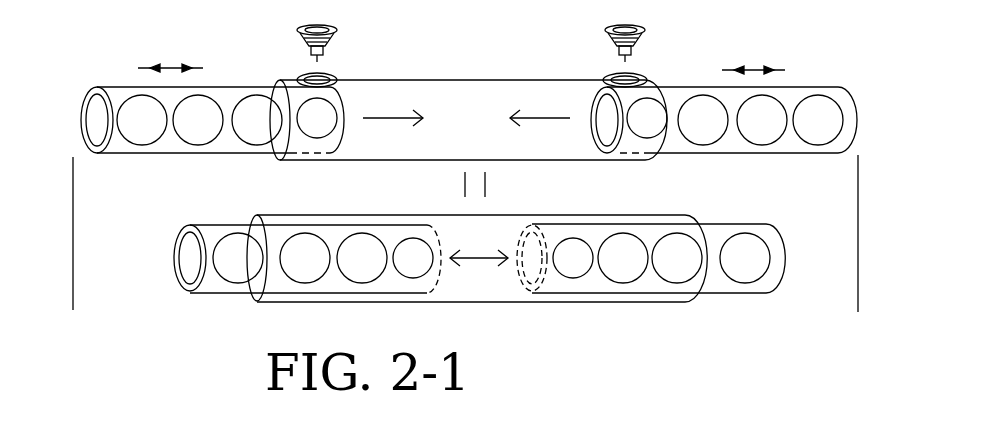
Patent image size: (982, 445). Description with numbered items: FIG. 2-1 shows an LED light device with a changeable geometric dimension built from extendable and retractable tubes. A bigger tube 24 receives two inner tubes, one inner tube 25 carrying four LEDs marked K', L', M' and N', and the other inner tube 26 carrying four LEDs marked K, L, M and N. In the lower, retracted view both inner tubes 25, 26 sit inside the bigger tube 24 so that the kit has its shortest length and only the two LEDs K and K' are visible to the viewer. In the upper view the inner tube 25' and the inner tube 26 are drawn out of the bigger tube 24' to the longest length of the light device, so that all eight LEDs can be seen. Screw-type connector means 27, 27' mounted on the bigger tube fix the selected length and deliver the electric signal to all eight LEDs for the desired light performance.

The bigger tube 24 is at (477, 288).
The bigger tube 24' is at (468, 97).
The inner tube 25 is at (307, 286).
The inner tube 25' is at (212, 87).
The inner tube 26 is at (818, 93).
The connector means 27 is at (655, 36).
The connector means 27' is at (350, 32).